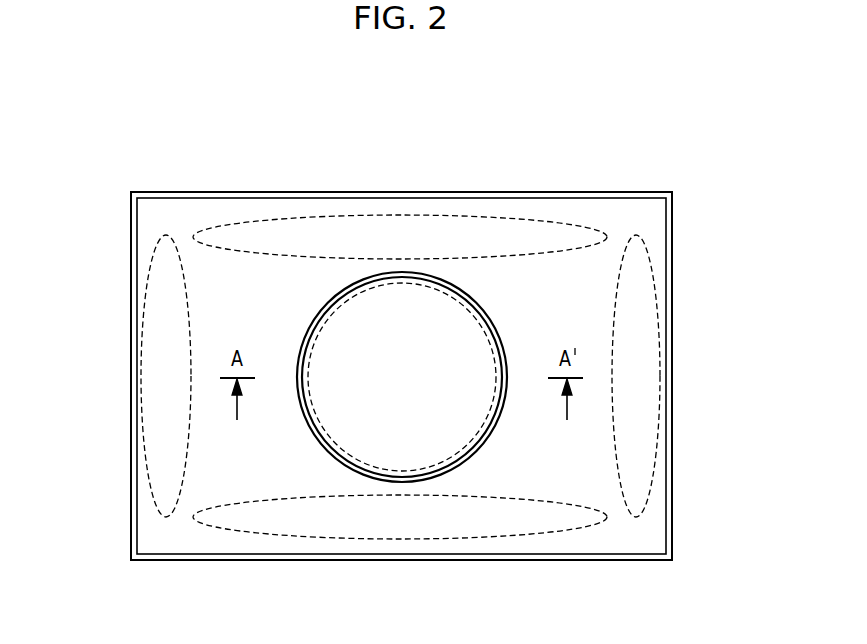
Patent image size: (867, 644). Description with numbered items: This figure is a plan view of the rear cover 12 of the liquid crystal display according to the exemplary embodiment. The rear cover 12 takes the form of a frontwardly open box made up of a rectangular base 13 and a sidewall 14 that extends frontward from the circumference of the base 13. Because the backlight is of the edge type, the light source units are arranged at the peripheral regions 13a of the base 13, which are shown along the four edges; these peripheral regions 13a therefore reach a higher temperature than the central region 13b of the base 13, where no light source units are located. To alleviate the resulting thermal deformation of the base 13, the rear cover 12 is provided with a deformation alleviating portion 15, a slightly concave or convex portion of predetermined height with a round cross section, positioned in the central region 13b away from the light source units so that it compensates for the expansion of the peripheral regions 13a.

The rear cover 12 is at (537, 187).
The base 13 is at (274, 307).
The peripheral regions 13a is at (380, 214).
The central region 13b is at (467, 438).
The sidewall 14 is at (176, 193).
The deformation alleviating portion 15 is at (377, 417).